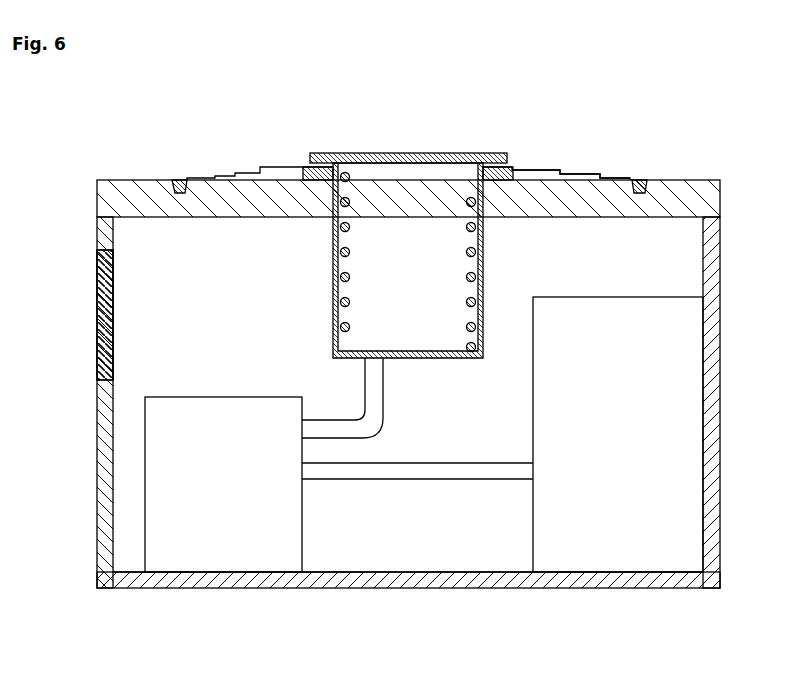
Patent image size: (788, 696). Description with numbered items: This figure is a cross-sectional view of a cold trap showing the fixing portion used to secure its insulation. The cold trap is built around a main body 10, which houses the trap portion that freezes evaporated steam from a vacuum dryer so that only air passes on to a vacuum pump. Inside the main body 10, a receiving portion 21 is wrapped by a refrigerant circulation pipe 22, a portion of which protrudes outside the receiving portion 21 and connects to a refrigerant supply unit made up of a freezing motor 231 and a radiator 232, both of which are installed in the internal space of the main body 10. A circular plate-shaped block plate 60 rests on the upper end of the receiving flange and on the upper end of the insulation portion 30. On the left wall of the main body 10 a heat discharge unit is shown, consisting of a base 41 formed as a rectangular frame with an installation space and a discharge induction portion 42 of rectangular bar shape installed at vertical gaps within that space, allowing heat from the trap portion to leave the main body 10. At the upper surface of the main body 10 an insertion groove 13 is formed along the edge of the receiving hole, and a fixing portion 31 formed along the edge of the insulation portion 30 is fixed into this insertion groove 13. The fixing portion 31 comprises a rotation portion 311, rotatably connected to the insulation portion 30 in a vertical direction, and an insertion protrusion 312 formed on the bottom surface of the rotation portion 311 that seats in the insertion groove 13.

The main body 10 is at (135, 181).
The insertion groove 13 is at (650, 205).
The base 41 is at (97, 252).
The discharge induction portion 42 is at (97, 324).
The receiving portion 21 is at (333, 270).
The refrigerant circulation pipe 22 is at (350, 182).
The block plate 60 is at (448, 153).
The insulation portion 30 is at (609, 141).
The rotation portion 311 is at (583, 174).
The fixing portion 31 is at (607, 170).
The insertion protrusion 312 is at (662, 185).
The freezing motor 231 is at (226, 548).
The radiator 232 is at (630, 550).